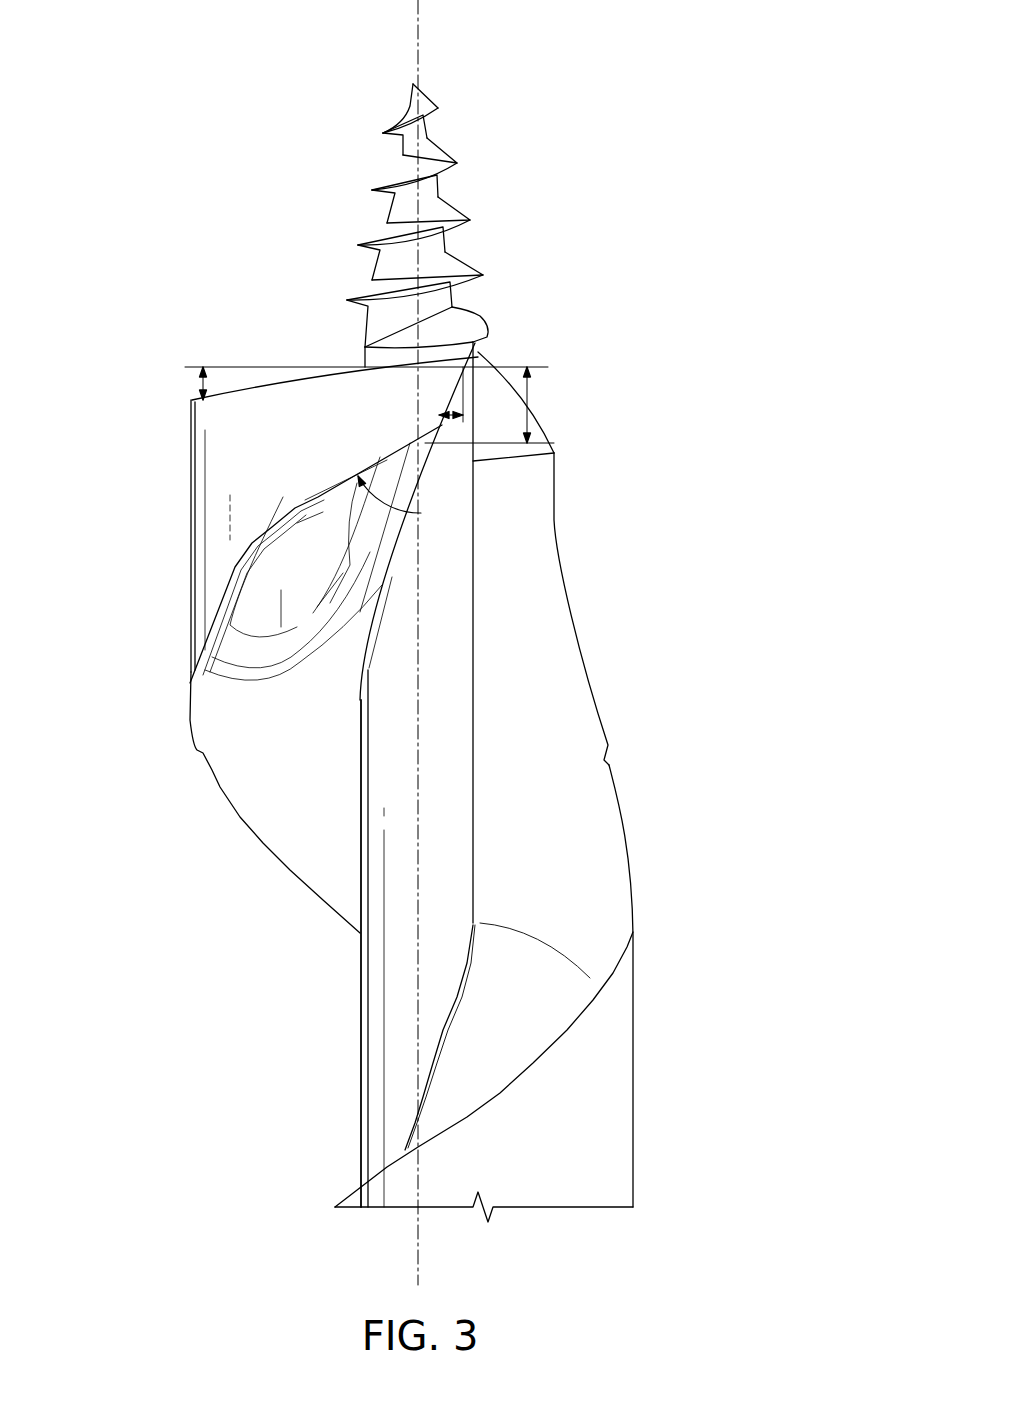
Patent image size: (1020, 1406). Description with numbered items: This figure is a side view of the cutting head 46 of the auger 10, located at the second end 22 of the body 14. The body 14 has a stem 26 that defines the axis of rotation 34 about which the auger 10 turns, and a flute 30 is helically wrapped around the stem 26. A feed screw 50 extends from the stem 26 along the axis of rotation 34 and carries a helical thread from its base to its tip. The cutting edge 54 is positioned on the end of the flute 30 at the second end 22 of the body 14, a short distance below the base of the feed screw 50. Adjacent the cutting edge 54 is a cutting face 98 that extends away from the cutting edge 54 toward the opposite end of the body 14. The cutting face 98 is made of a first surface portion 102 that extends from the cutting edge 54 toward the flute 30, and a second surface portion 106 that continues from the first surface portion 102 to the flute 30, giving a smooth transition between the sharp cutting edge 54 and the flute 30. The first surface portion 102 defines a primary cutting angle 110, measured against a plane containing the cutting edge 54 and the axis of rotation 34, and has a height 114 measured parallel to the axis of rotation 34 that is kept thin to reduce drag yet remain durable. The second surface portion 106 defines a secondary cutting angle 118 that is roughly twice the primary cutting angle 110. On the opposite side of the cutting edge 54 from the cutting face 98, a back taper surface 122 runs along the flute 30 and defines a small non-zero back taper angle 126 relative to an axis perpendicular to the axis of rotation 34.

The auger 10 is at (645, 46).
The body 14 is at (790, 1010).
The second end 22 is at (825, 242).
The stem 26 is at (368, 992).
The flute 30 is at (263, 797).
The axis of rotation 34 is at (417, 1243).
The cutting head 46 is at (122, 198).
The feed screw 50 is at (302, 142).
The cutting edge 54 is at (443, 398).
The cutting face 98 is at (447, 476).
The first surface portion 102 is at (487, 352).
The second surface portion 106 is at (297, 490).
The primary cutting angle 110 is at (474, 462).
The height 114 is at (530, 384).
The secondary cutting angle 118 is at (416, 513).
The back taper surface 122 is at (190, 398).
The back taper angle 126 is at (200, 383).